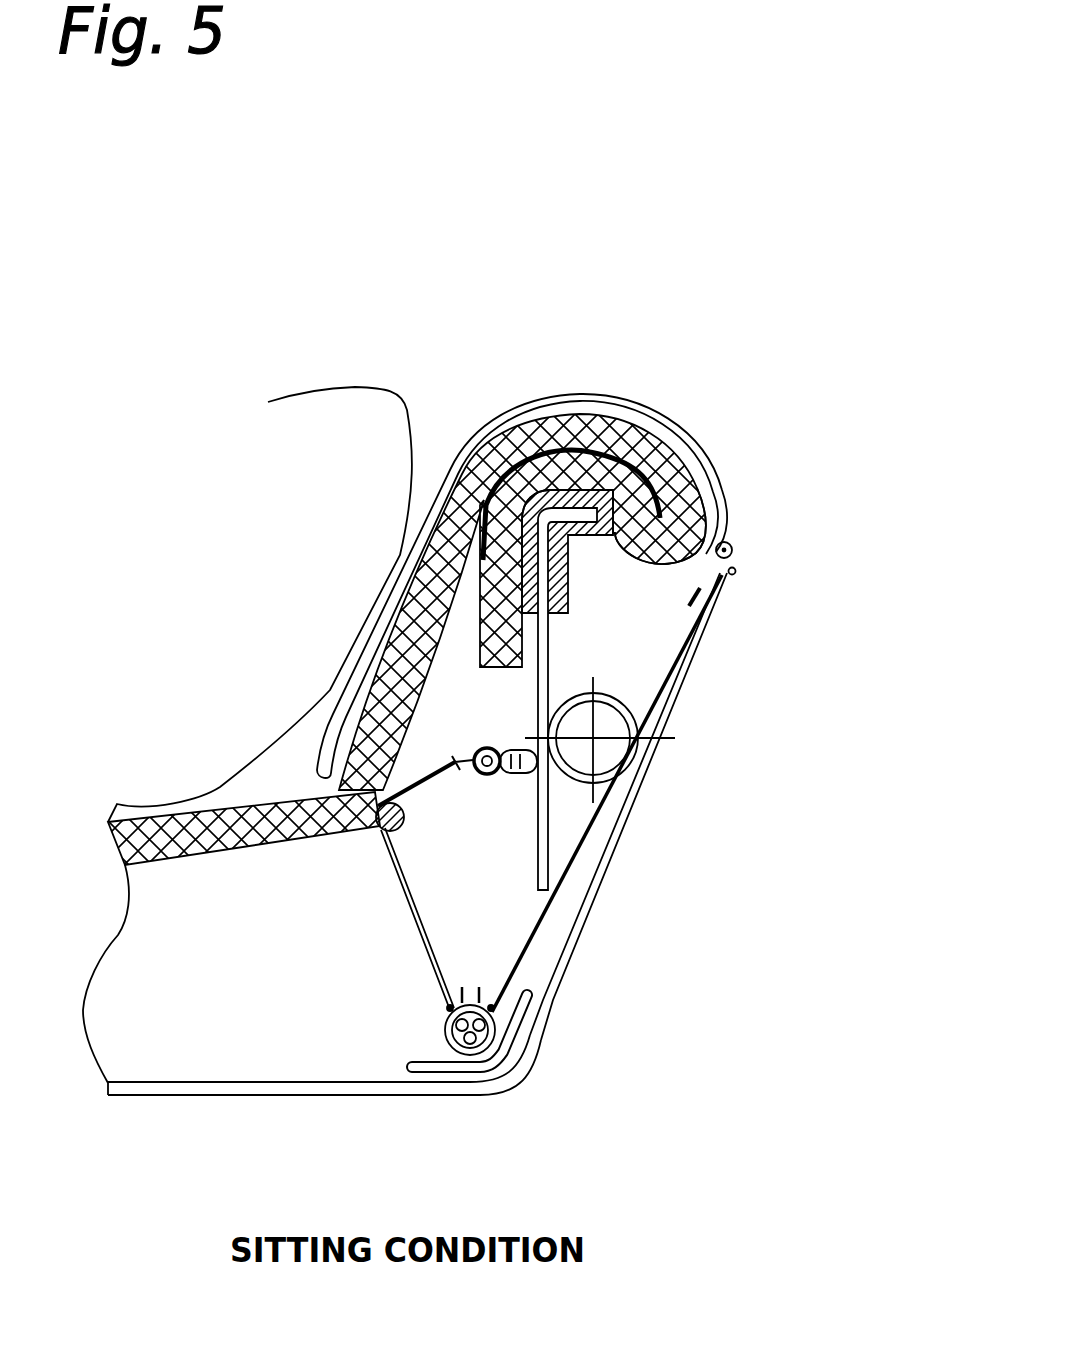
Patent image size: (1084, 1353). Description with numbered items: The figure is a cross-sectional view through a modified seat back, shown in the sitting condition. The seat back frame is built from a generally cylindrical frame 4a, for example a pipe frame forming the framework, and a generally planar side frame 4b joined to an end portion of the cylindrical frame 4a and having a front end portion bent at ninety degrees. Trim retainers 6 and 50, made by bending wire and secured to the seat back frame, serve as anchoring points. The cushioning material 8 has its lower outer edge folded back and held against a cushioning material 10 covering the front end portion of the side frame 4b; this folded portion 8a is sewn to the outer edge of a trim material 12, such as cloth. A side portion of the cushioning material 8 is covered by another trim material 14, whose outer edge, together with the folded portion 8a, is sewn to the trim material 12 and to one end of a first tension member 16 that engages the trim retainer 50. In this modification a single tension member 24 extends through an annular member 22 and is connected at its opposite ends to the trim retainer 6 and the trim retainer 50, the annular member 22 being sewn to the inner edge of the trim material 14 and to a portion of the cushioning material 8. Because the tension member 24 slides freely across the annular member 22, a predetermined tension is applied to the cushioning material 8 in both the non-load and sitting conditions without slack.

The generally cylindrical frame 4a is at (627, 700).
The side frame 4b is at (548, 850).
The trim retainer 6 is at (489, 775).
The cushioning material 8 is at (197, 820).
The folded portion 8a is at (683, 517).
The cushioning material 10 is at (568, 590).
The trim material 12 is at (637, 793).
The trim material 14 is at (655, 410).
The first tension member 16 is at (510, 970).
The annular member 22 is at (405, 827).
The single tension member 24 is at (407, 907).
The trim retainer 50 is at (445, 1027).